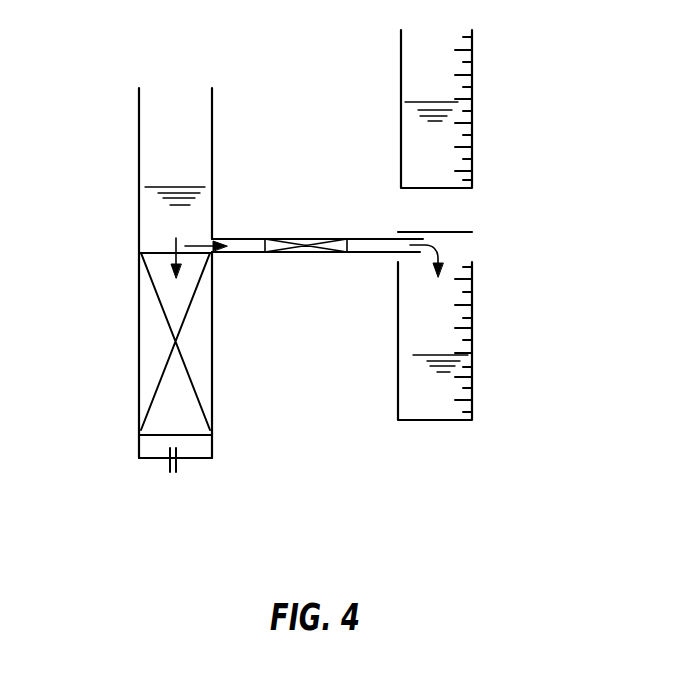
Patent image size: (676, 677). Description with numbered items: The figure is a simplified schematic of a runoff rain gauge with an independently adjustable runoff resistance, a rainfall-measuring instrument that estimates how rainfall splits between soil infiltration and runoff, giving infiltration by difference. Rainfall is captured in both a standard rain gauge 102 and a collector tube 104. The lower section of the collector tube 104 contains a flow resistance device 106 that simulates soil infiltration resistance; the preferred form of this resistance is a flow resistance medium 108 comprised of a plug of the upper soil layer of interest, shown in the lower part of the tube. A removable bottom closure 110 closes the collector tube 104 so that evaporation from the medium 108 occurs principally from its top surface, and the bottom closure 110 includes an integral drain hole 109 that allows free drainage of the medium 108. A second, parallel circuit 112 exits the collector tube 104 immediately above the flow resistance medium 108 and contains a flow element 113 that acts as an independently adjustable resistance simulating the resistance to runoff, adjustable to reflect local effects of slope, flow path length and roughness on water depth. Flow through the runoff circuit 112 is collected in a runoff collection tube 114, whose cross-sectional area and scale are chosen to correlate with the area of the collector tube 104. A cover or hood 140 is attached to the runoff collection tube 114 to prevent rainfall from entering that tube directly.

The standard rain gauge 102 is at (473, 128).
The collector tube 104 is at (139, 157).
The flow resistance device 106 is at (146, 253).
The flow resistance medium 108 is at (148, 375).
The drain hole 109 is at (172, 472).
The removable bottom closure 110 is at (200, 458).
The second parallel circuit 112 is at (365, 252).
The flow element 113 is at (315, 238).
The runoff collection tube 114 is at (398, 365).
The cover or hood 140 is at (466, 232).